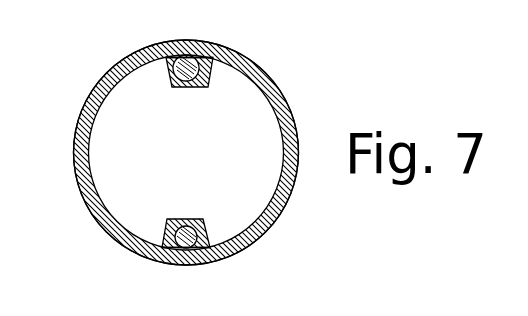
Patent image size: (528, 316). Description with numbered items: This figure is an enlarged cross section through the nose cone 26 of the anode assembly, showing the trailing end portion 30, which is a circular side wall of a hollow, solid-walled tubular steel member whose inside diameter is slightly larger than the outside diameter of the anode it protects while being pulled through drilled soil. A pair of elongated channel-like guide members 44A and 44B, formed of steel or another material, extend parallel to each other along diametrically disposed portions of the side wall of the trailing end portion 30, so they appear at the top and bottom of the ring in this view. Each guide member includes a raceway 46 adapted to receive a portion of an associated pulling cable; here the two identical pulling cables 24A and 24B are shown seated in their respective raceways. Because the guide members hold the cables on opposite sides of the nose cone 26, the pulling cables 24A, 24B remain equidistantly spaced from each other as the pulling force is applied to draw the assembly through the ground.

The nose cone 26 is at (96, 79).
The trailing end portion 30 is at (272, 77).
The pulling cable 24A is at (183, 88).
The pulling cable 24B is at (178, 219).
The guide member 44A is at (198, 88).
The guide member 44B is at (202, 219).
The raceway 46 is at (205, 61).